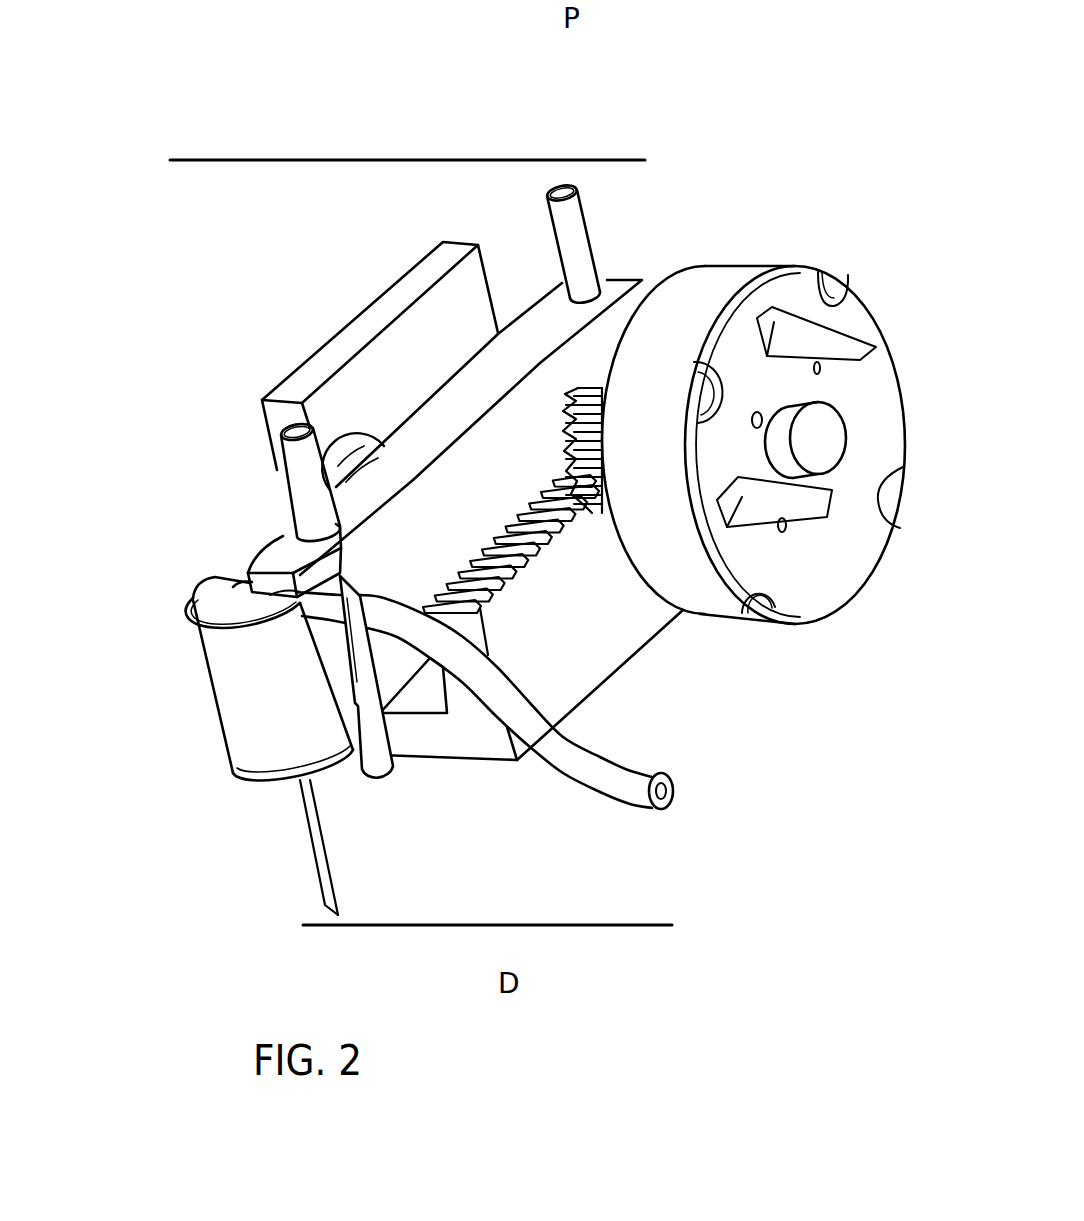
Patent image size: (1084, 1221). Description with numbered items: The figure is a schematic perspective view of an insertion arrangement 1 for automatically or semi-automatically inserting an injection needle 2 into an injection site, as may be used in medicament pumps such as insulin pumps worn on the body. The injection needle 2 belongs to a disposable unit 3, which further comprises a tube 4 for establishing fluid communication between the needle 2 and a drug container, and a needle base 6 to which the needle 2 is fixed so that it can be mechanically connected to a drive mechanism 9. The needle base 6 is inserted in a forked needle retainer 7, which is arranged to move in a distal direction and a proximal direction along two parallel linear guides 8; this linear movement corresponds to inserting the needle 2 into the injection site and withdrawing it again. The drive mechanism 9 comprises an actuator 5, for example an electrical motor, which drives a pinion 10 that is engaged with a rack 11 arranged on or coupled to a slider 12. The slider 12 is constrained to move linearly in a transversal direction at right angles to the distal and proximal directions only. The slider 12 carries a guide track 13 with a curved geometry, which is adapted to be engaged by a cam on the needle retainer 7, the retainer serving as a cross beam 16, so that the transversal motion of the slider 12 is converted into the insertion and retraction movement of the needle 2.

The insertion arrangement 1 is at (796, 124).
The injection needle 2 is at (320, 867).
The disposable unit 3 is at (222, 810).
The tube 4 is at (608, 783).
The actuator 5 is at (737, 283).
The needle base 6 is at (233, 702).
The needle retainer 7 is at (489, 496).
The linear guides 8 is at (560, 182).
The drive mechanism 9 is at (748, 655).
The pinion 10 is at (598, 388).
The rack 11 is at (545, 558).
The slider 12 is at (422, 273).
The guide track 13 is at (357, 440).
The cross beam 16 is at (447, 404).